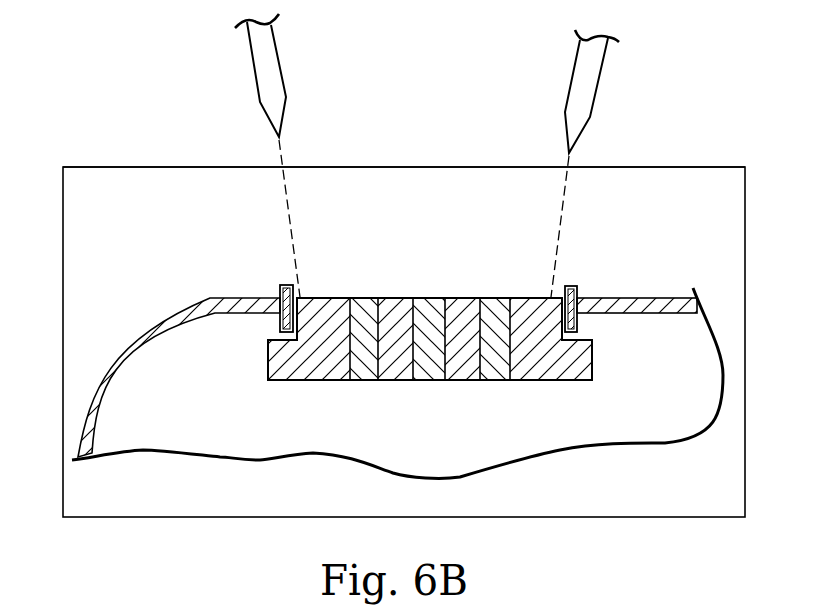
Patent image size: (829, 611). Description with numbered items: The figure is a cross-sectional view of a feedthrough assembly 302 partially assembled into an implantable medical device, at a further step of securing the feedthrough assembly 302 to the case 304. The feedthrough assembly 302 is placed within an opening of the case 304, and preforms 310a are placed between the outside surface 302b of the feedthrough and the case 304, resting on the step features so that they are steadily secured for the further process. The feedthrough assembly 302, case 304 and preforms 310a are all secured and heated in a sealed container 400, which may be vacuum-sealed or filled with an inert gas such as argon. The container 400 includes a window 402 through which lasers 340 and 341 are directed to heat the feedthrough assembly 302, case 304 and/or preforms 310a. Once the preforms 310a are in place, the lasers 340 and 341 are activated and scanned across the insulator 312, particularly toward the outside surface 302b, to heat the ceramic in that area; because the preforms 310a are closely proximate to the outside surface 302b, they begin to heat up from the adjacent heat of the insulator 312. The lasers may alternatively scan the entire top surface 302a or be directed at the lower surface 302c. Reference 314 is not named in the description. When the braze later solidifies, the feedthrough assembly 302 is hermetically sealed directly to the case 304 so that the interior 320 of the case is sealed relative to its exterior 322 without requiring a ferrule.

The laser 340 is at (252, 58).
The laser 341 is at (602, 65).
The sealed container 400 is at (745, 258).
The window 402 is at (682, 166).
The feedthrough assembly 302 is at (318, 297).
The top surface 302a is at (513, 297).
The outside surface 302b is at (267, 371).
The lower surface 302c is at (543, 381).
The case 304 is at (105, 355).
The preforms 310a is at (278, 286).
The insulator 312 is at (337, 297).
The lower segment portion 314 is at (360, 381).
The interior 320 is at (195, 380).
The exterior 322 is at (125, 286).